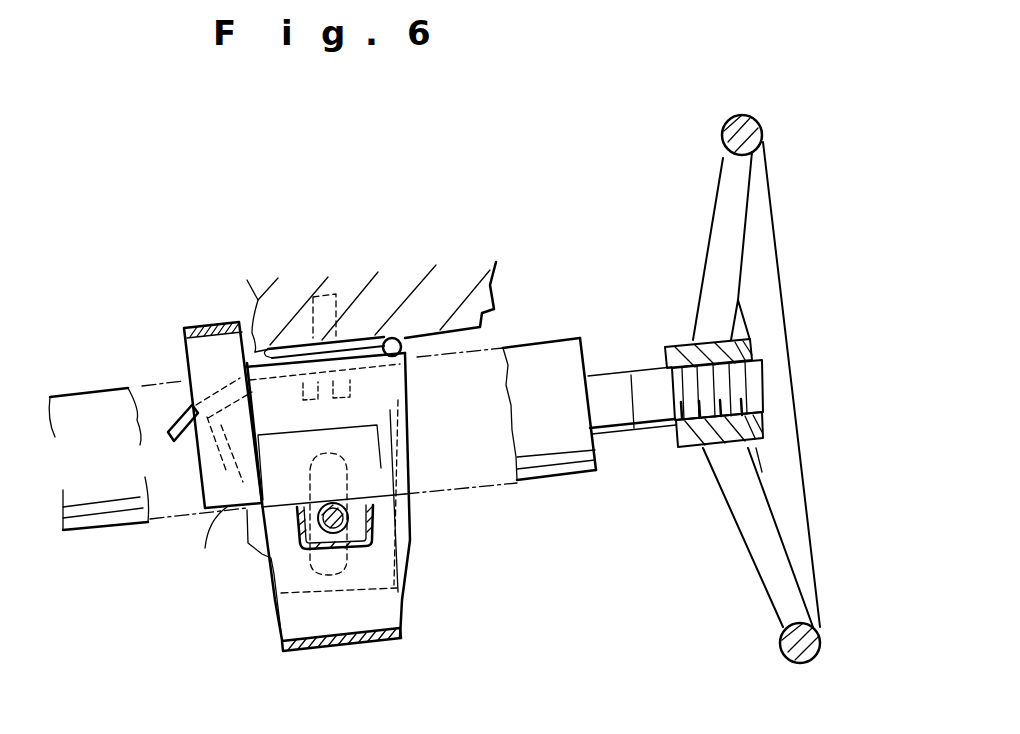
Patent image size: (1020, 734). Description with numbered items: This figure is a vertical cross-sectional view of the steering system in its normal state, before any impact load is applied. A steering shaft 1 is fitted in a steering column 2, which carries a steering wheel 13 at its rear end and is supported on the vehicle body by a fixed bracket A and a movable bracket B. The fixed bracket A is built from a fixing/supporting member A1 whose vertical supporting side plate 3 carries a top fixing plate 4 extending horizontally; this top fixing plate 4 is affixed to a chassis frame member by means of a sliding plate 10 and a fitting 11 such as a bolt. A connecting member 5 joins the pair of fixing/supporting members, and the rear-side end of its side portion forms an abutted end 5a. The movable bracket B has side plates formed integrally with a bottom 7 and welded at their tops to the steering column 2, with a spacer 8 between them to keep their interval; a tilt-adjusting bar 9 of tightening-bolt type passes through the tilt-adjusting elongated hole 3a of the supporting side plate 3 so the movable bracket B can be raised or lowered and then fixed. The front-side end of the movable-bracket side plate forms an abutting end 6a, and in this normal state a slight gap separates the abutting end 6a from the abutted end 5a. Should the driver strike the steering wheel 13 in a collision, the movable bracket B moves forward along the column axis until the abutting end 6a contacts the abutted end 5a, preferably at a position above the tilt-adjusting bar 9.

The steering shaft 1 is at (618, 437).
The steering column 2 is at (538, 347).
The supporting side plate 3 is at (392, 410).
The tilt-adjusting elongated hole 3a is at (318, 459).
The top fixing plate 4 is at (251, 345).
The connecting member 5 is at (180, 330).
The abutted end 5a is at (257, 453).
The abutting end 6a is at (202, 547).
The bottom 7 is at (385, 643).
The spacer 8 is at (373, 542).
The tilt-adjusting bar 9 is at (330, 500).
The sliding plate 10 is at (425, 332).
The fitting 11 is at (418, 376).
The steering wheel 13 is at (793, 347).
The fixed bracket A is at (418, 517).
The fixing/supporting member A1 is at (418, 440).
The movable bracket B is at (275, 651).